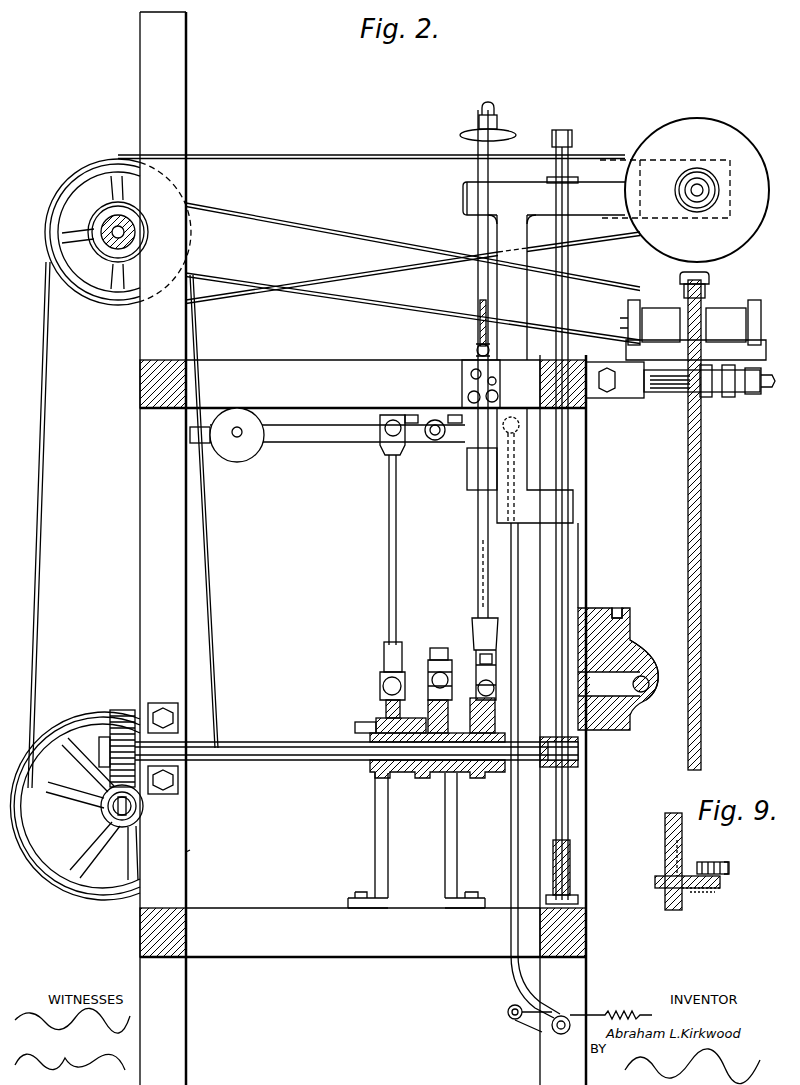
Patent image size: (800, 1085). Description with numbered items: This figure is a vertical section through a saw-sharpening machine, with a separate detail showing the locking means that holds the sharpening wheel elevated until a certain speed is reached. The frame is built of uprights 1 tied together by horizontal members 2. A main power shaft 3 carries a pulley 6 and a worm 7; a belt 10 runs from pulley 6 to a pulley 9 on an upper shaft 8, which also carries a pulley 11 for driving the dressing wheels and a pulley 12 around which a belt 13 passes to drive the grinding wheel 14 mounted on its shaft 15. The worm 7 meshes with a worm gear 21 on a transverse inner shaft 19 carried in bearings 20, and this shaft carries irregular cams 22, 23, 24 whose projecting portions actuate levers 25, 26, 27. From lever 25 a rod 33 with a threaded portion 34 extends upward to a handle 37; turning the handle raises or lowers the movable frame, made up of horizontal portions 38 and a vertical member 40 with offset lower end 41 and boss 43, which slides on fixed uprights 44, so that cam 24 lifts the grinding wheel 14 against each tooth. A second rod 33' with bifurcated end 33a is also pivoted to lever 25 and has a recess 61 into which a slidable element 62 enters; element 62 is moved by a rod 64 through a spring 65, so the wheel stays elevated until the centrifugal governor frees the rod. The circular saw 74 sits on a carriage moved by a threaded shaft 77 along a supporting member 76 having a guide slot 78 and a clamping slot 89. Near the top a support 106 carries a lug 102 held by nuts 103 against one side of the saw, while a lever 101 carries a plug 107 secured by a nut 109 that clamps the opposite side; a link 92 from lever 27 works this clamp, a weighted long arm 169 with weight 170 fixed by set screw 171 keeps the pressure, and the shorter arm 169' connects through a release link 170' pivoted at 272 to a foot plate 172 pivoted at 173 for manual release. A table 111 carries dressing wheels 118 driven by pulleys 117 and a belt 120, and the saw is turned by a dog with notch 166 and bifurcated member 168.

In FIG. 2, the uprights 1 is at (140, 484).
In FIG. 2, the horizontal members 2 is at (163, 360).
In FIG. 2, the shaft 3 is at (136, 806).
In FIG. 2, the pulley 6 is at (100, 806).
In FIG. 2, the worm 7 is at (103, 828).
In FIG. 2, the shaft 8 is at (126, 232).
In FIG. 2, the pulley 9 is at (483, 313).
In FIG. 2, the belt 10 is at (54, 378).
In FIG. 2, the pulley 11 is at (118, 232).
In FIG. 2, the pulley 12 is at (100, 300).
In FIG. 2, the belt 13 is at (272, 156).
In FIG. 2, the grinding wheel 14 is at (684, 177).
In FIG. 2, the shaft 15 is at (705, 182).
In FIG. 2, the inner shaft 19 is at (255, 742).
In FIG. 2, the bearings 20 is at (160, 703).
In FIG. 2, the worm gear 21 is at (118, 712).
In FIG. 2, the cam 22 is at (428, 803).
In FIG. 2, the cam 23 is at (430, 773).
In FIG. 2, the cam 24 is at (485, 773).
In FIG. 2, the lever 25 is at (495, 645).
In FIG. 2, the lever 26 is at (453, 673).
In FIG. 2, the lever 27 is at (384, 670).
In FIG. 2, the rod 33 is at (482, 364).
In FIG. 2, the rod 33' is at (467, 575).
In FIG. 9, the rod 33' is at (659, 861).
In FIG. 2, the bifurcated end portion 33a is at (474, 652).
In FIG. 2, the threaded portion 34 is at (476, 512).
In FIG. 2, the handle 37 is at (464, 134).
In FIG. 2, the horizontally extending portions 38 is at (532, 261).
In FIG. 2, the vertically extending member 40 is at (552, 505).
In FIG. 2, the offset lower end portion 41 is at (573, 508).
In FIG. 2, the boss 43 is at (466, 195).
In FIG. 2, the fixed uprights 44 is at (570, 128).
In FIG. 2, the recess 61 is at (476, 349).
In FIG. 9, the recess 61 is at (682, 855).
In FIG. 9, the slidable element 62 is at (722, 884).
In FIG. 9, the rod 64 is at (714, 861).
In FIG. 9, the helical spring 65 is at (729, 866).
In FIG. 2, the circular saw 74 is at (717, 516).
In FIG. 2, the supporting member 76 is at (625, 626).
In FIG. 2, the threaded shaft 77 is at (650, 662).
In FIG. 2, the slot 78 is at (617, 607).
In FIG. 2, the slot 89 is at (632, 684).
In FIG. 2, the link 92 is at (388, 548).
In FIG. 2, the lever 101 is at (731, 397).
In FIG. 2, the lug 102 is at (720, 388).
In FIG. 2, the nuts 103 is at (642, 390).
In FIG. 2, the support 106 is at (619, 389).
In FIG. 2, the plug 107 is at (707, 397).
In FIG. 2, the nut 109 is at (758, 394).
In FIG. 2, the table 111 is at (775, 380).
In FIG. 2, the pulley 117 is at (760, 320).
In FIG. 2, the dressing wheels 118 is at (672, 320).
In FIG. 2, the belt 120 is at (298, 234).
In FIG. 2, the notch 166 is at (709, 276).
In FIG. 2, the bifurcated member 168 is at (710, 292).
In FIG. 2, the long arm 169 is at (327, 439).
In FIG. 2, the shorter arm 169' is at (445, 443).
In FIG. 2, the weight 170 is at (252, 442).
In FIG. 2, the rod 170' is at (523, 717).
In FIG. 2, the set screw 171 is at (244, 436).
In FIG. 2, the foot plate 172 is at (619, 1012).
In FIG. 2, the pivot 173 is at (513, 1020).
In FIG. 2, the pivot 272 is at (561, 1035).